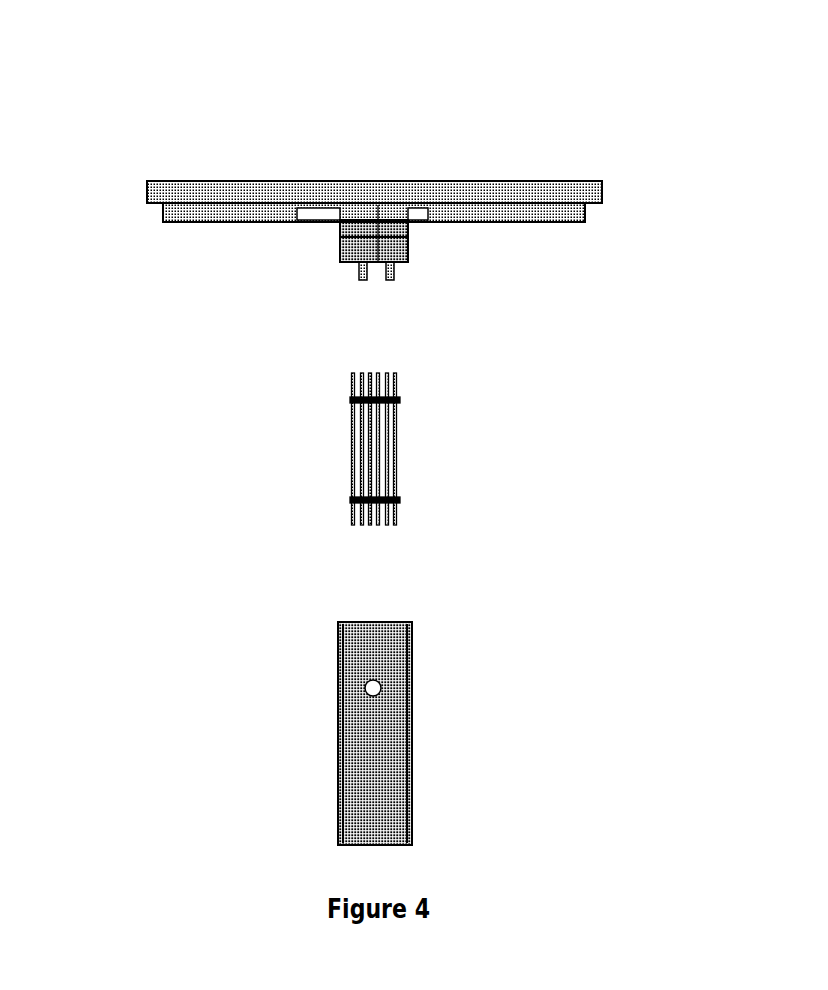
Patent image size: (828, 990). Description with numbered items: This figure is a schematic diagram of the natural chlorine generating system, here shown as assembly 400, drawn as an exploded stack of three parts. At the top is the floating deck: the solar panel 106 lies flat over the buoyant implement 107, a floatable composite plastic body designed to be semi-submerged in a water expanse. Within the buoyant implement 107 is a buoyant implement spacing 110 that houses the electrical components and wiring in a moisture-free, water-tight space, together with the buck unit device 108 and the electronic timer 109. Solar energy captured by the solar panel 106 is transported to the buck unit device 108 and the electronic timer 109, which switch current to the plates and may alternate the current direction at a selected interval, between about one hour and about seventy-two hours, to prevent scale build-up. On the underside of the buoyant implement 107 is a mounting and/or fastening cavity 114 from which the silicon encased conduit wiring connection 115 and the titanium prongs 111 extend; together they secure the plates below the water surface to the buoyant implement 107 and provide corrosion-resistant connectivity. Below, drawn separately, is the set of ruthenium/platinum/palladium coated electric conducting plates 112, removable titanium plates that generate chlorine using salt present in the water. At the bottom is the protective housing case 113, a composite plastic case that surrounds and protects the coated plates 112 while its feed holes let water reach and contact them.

The sensor assembly 400 is at (583, 112).
The solar panel 106 is at (187, 177).
The buoyant implement 107 is at (145, 202).
The buck unit device 108 is at (302, 222).
The electronic timer 109 is at (420, 215).
The buoyant implement spacing 110 is at (555, 207).
The titanium prongs 111 is at (350, 280).
The ruthenium/platinum/palladium coated electric conducting plates 112 is at (342, 473).
The protective housing case 113 is at (327, 738).
The mounting and/or fastening cavity 114 is at (400, 250).
The silicon encased conduit wiring connection 115 is at (380, 217).